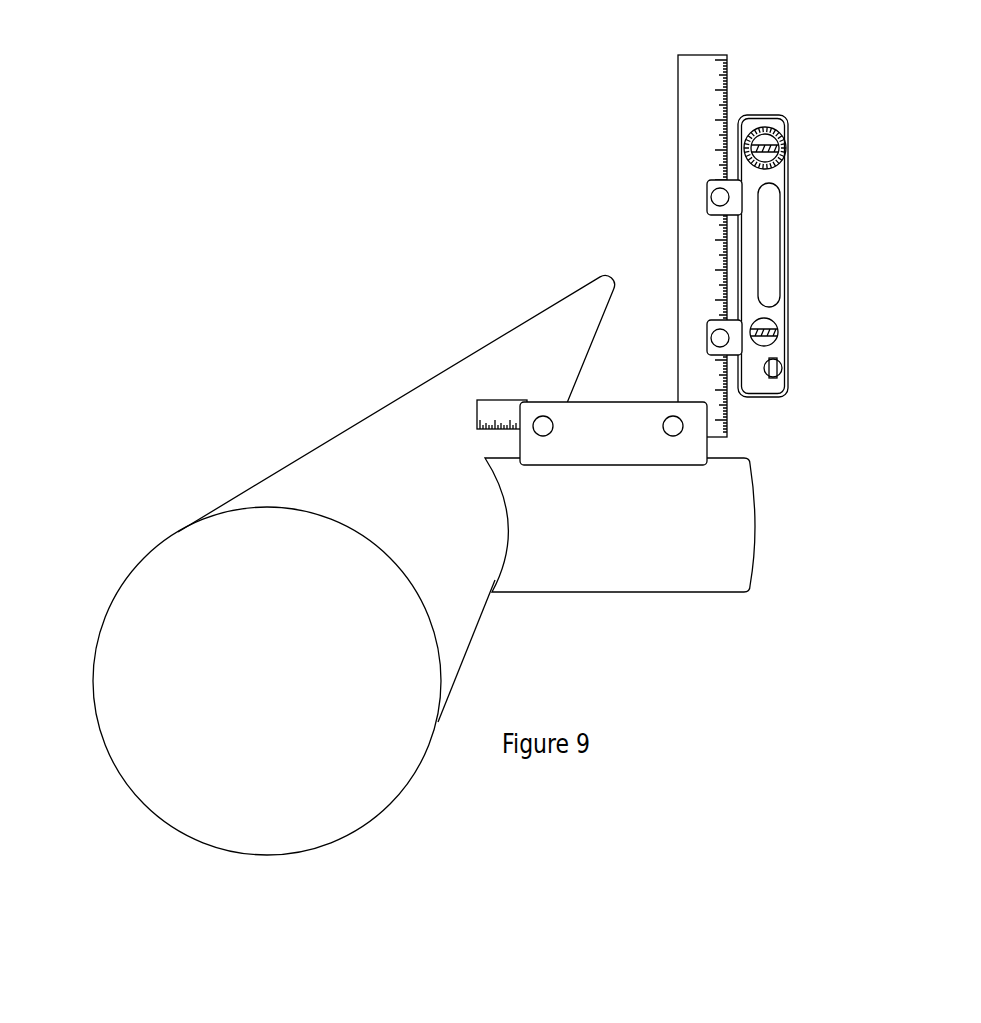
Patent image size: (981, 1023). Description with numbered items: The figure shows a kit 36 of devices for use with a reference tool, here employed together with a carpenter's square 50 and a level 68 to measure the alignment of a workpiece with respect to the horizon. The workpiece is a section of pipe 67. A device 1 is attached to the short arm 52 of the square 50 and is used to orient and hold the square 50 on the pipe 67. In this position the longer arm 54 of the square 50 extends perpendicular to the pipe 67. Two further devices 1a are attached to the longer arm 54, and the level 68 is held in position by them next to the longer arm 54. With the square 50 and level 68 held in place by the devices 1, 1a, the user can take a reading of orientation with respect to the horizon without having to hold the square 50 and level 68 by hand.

The kit 36 is at (557, 139).
The longer arm 54 is at (697, 112).
The carpenter's square 50 is at (691, 255).
The short arm 52 is at (492, 410).
The device 1 is at (613, 433).
The devices 1a is at (735, 197).
The level 68 is at (748, 255).
The pipe 67 is at (620, 525).